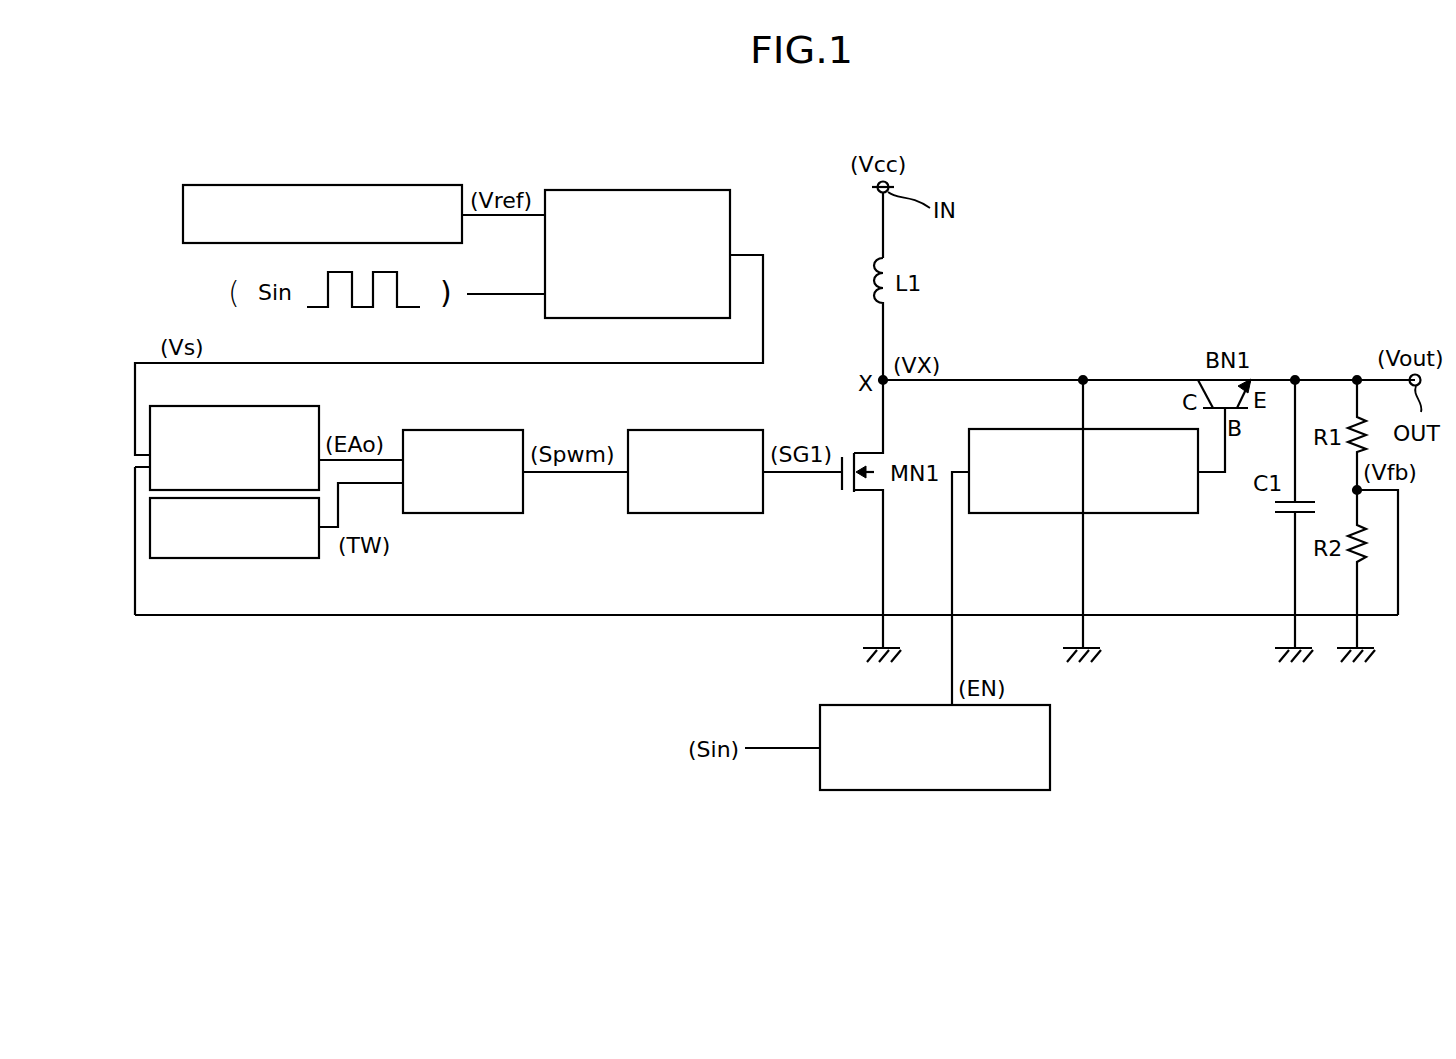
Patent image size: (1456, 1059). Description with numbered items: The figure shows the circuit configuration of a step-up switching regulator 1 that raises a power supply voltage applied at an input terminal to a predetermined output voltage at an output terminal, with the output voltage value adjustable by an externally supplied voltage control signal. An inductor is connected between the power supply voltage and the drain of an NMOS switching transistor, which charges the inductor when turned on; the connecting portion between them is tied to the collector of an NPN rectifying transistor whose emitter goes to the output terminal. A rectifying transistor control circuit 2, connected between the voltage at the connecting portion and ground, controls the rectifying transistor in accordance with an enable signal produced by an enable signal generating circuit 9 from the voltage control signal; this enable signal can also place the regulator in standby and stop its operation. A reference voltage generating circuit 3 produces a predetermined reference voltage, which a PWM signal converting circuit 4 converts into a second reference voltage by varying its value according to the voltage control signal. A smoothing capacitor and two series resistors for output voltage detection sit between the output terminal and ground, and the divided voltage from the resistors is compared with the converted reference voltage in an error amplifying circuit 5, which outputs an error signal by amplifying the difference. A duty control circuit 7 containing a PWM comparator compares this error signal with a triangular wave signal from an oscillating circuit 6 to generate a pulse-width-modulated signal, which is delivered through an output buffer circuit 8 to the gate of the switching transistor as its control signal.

The switching regulator 1 is at (1072, 212).
The rectifying transistor control circuit 2 is at (1155, 513).
The reference voltage generating circuit 3 is at (183, 210).
The PWM signal converting circuit 4 is at (700, 190).
The error amplifying circuit 5 is at (255, 406).
The oscillating circuit 6 is at (287, 558).
The duty control circuit 7 is at (480, 513).
The output buffer circuit 8 is at (722, 513).
The enable signal generating circuit 9 is at (1050, 773).